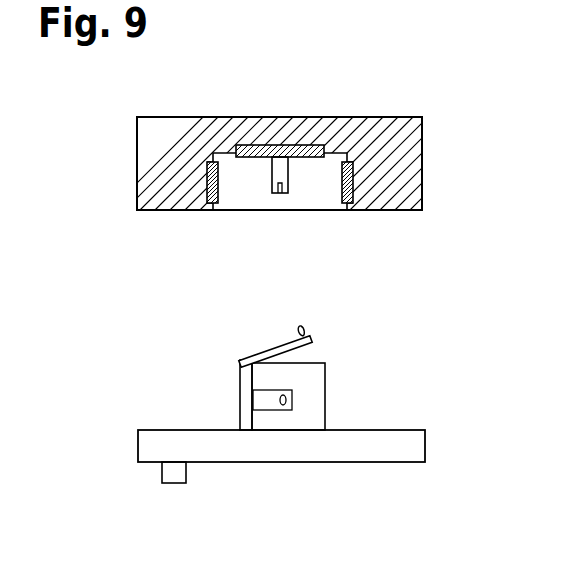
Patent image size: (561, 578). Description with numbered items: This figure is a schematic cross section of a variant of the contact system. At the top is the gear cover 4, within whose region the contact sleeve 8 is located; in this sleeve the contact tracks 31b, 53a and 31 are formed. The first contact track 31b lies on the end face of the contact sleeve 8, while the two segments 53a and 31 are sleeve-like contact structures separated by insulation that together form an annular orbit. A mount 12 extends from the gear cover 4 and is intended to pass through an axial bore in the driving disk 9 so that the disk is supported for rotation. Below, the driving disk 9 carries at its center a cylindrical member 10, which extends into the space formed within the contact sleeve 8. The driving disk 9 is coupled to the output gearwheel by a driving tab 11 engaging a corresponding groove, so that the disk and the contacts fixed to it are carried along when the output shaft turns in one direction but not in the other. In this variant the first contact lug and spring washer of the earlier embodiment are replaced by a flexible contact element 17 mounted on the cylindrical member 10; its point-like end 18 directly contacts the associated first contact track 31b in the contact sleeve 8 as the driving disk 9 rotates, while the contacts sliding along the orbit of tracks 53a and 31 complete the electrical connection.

The gear cover 4 is at (383, 130).
The contact sleeve 8 is at (213, 154).
The first contact track 31b is at (305, 146).
The third contact track 31 is at (207, 190).
The second contact track 53a is at (347, 205).
The mount 12 is at (282, 193).
The driving disk 9 is at (393, 453).
The driving tab 11 is at (167, 473).
The cylindrical member 10 is at (315, 390).
The flexible contact element 17 is at (272, 347).
The point-like end 18 is at (302, 330).